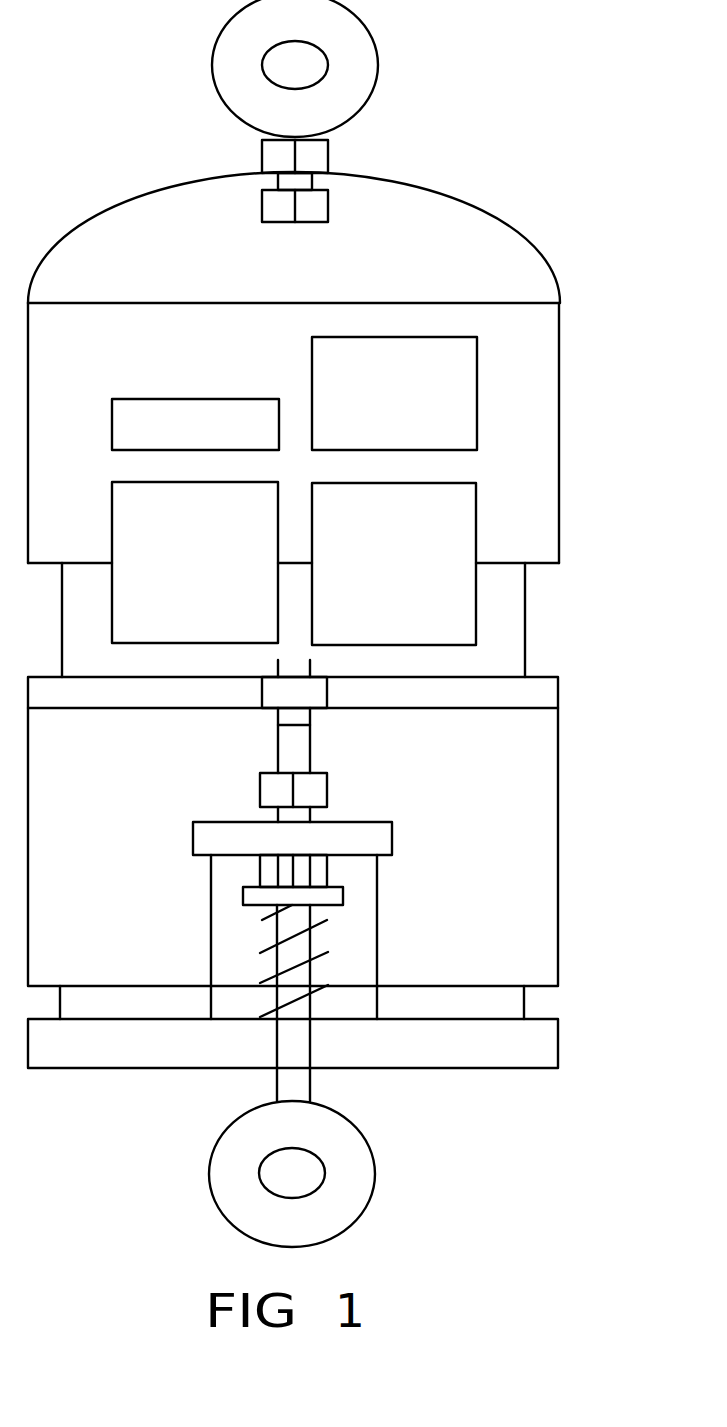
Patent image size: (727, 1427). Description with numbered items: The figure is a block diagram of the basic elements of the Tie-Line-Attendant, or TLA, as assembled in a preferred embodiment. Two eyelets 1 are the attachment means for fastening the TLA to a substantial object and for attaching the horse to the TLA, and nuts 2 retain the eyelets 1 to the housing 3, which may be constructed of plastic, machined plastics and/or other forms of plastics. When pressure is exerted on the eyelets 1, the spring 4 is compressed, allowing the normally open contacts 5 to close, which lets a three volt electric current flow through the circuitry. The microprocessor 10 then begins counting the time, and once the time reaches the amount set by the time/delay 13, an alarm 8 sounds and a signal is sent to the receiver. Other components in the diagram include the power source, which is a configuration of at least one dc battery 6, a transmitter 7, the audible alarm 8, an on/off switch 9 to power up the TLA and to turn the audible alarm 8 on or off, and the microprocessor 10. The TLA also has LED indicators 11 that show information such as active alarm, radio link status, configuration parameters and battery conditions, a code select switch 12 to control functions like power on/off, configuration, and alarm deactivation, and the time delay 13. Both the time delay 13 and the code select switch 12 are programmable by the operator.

The eyelet 1 is at (378, 62).
The nut 2 is at (328, 205).
The housing 3 is at (547, 262).
The spring 4 is at (325, 953).
The normally open contacts 5 is at (322, 697).
The battery 6 is at (153, 424).
The transmitter 7 is at (135, 547).
The audible alarm 8 is at (162, 575).
The on/off switch 9 is at (458, 366).
The microprocessor 10 is at (440, 572).
The LED indicators 11 is at (455, 418).
The code select switch 12 is at (462, 392).
The time delay 13 is at (453, 535).